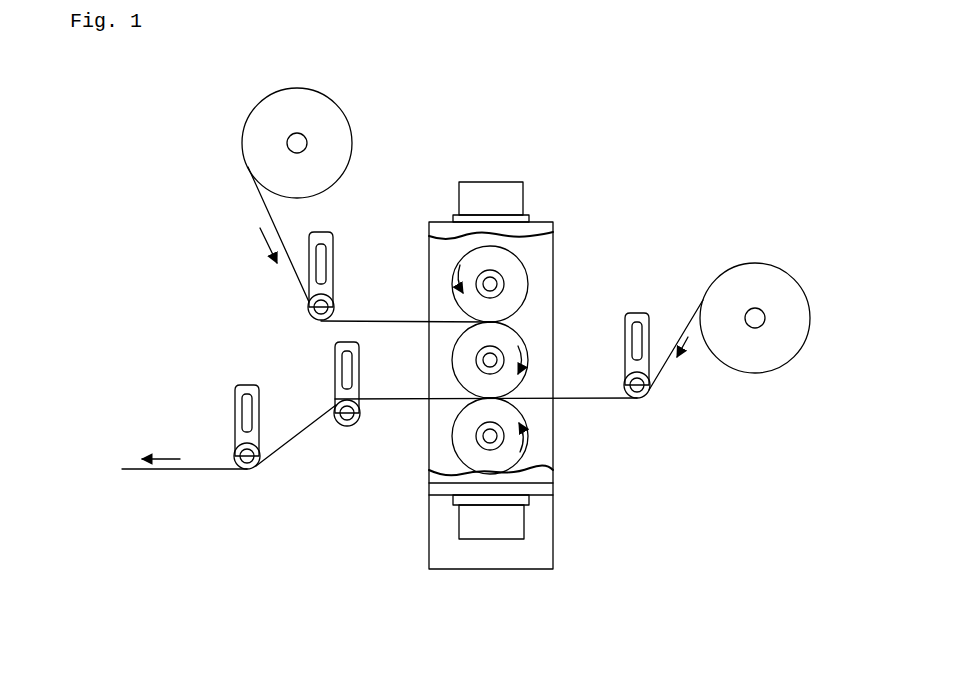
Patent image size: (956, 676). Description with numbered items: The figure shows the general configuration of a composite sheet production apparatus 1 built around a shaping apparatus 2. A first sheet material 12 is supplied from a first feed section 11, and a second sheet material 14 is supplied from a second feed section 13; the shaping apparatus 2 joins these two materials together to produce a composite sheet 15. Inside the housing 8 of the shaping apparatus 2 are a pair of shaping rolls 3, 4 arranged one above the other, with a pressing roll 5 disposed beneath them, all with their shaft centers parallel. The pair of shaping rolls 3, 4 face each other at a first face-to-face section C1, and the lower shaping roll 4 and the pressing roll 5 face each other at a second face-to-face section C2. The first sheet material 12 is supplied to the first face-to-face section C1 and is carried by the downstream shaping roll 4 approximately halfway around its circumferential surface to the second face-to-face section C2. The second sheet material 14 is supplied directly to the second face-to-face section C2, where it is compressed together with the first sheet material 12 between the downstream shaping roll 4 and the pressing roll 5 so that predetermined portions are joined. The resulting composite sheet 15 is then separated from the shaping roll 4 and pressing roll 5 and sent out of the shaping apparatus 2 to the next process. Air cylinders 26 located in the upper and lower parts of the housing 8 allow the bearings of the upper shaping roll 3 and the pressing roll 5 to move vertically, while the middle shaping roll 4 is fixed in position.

The composite sheet production apparatus 1 is at (737, 150).
The shaping apparatus 2 is at (546, 220).
The shaping roll 3 is at (525, 275).
The shaping roll 4 is at (525, 338).
The pressing roll 5 is at (528, 437).
The housing 8 is at (430, 368).
The first feed section 11 is at (343, 123).
The first sheet material 12 is at (262, 212).
The second feed section 13 is at (753, 366).
The second sheet material 14 is at (686, 323).
The composite sheet 15 is at (200, 468).
The air cylinder 26 is at (486, 187).
The first face-to-face section C1 is at (486, 320).
The second face-to-face section C2 is at (488, 402).